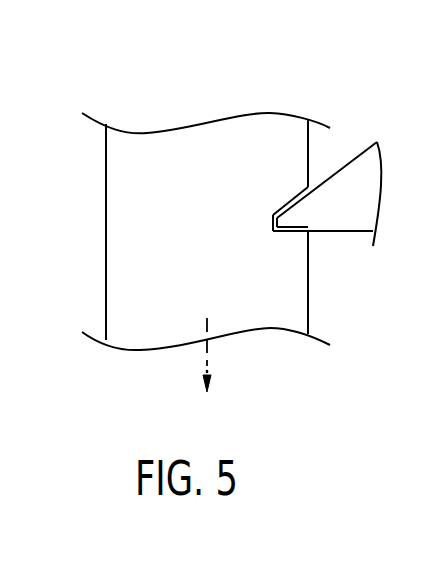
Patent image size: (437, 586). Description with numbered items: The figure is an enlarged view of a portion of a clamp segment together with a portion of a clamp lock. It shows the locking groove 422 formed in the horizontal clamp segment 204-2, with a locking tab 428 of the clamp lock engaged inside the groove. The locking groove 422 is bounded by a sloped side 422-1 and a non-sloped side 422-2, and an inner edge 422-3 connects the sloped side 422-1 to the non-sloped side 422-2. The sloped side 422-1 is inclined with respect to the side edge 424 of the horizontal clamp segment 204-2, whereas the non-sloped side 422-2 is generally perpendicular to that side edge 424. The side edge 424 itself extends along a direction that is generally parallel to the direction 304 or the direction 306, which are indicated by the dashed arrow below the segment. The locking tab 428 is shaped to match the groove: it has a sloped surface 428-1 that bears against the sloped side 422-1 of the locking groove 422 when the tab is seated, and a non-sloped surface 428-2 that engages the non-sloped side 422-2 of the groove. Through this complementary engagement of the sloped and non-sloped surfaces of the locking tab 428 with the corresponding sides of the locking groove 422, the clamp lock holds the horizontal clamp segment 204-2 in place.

The horizontal clamp segment 204-2 is at (146, 151).
The side edge 424 is at (309, 295).
The locking groove 422 is at (271, 217).
The sloped side 422-1 is at (294, 200).
The non-sloped side 422-2 is at (292, 233).
The inner edge 422-3 is at (272, 217).
The locking tab 428 is at (351, 184).
The sloped surface 428-1 is at (349, 160).
The non-sloped surface 428-2 is at (340, 232).
The direction 304 is at (207, 366).
The direction 306 is at (171, 374).